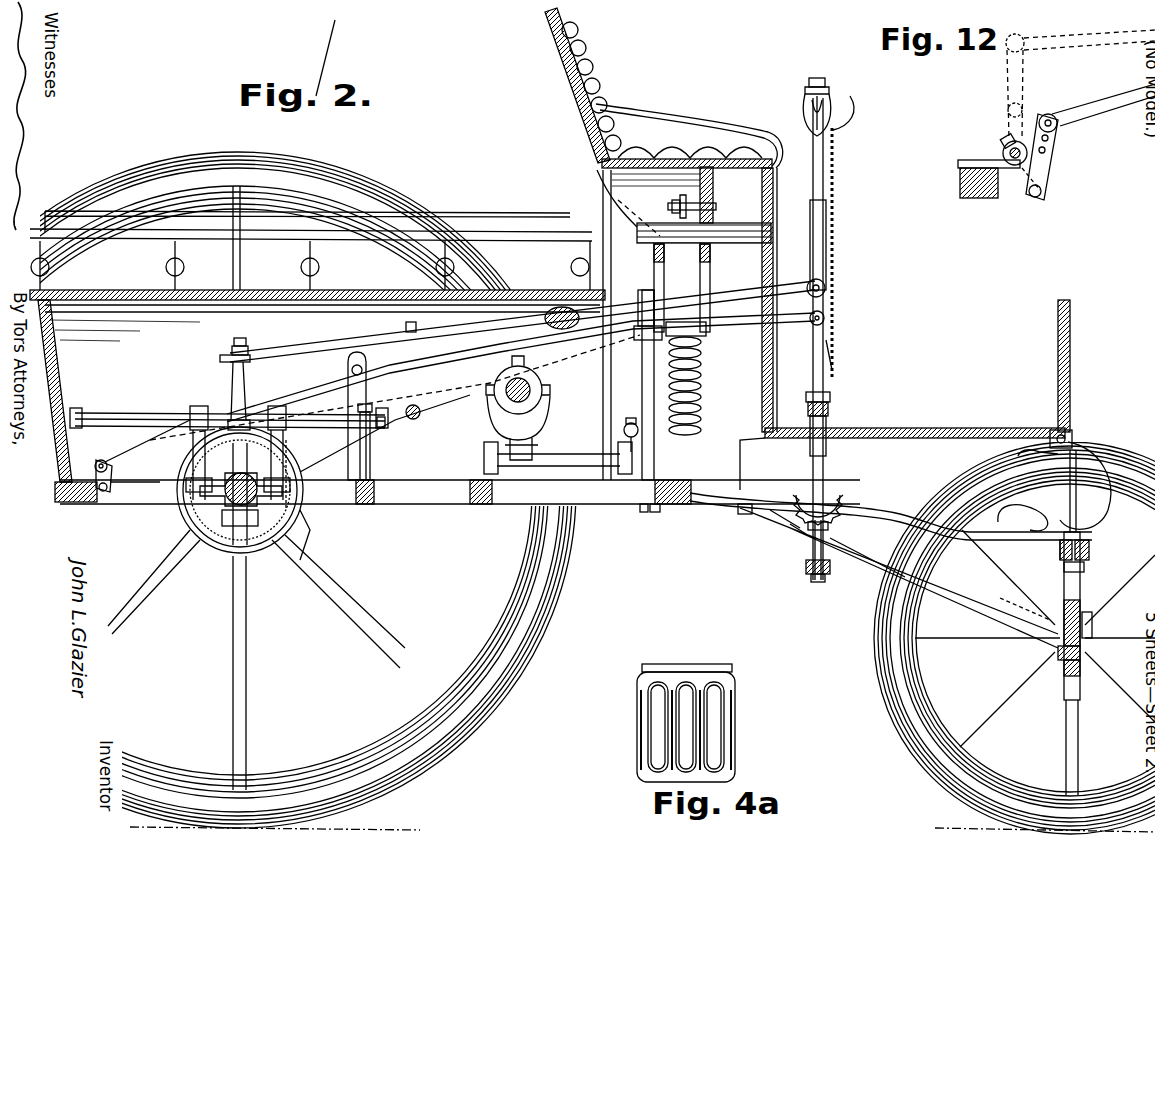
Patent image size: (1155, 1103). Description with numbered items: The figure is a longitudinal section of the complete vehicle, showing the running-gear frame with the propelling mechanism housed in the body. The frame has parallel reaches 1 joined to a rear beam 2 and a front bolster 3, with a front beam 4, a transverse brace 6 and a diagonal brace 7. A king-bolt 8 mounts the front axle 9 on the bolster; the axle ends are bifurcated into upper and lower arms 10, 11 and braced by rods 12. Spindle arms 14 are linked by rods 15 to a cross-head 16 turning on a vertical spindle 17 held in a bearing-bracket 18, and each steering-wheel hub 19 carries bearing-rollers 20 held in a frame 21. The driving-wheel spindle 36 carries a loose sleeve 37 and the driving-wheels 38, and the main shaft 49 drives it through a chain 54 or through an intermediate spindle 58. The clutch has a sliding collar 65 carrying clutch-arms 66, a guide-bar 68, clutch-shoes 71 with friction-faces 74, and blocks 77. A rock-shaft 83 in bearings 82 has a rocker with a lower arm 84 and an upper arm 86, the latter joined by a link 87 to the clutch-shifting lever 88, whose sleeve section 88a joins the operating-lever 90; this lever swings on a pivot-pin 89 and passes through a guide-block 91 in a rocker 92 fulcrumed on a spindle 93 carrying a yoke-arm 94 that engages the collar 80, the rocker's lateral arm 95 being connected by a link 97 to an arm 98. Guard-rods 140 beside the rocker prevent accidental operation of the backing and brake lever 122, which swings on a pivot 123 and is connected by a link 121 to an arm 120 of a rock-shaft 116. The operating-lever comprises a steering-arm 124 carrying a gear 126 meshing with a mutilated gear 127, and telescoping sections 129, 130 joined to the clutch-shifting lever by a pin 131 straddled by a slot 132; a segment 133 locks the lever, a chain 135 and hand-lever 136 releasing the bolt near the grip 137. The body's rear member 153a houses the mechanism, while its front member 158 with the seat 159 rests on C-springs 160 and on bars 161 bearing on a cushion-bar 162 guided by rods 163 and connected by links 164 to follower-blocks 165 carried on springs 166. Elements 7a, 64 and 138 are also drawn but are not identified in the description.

In FIG. 2, the reaches 1 is at (140, 492).
In FIG. 2, the rear beam 2 is at (78, 502).
In FIG. 12, the rear beam 2 is at (966, 200).
In FIG. 2, the bolster 3 is at (1089, 556).
In FIG. 2, the front beam 4 is at (658, 512).
In FIG. 2, the intermediate transverse brace 6 is at (380, 504).
In FIG. 2, the diagonal brace 7 is at (432, 500).
In FIG. 2, the reach rod 7a is at (896, 514).
In FIG. 2, the king-bolt 8 is at (1060, 552).
In FIG. 2, the front axle 9 is at (1082, 580).
In FIG. 2, the upper arm 10 is at (1064, 568).
In FIG. 2, the lower arm 11 is at (1078, 660).
In FIG. 2, the brace rods 12 is at (858, 536).
In FIG. 2, the inwardly-extending arms 14 is at (899, 578).
In FIG. 2, the connecting rods 15 is at (855, 582).
In FIG. 2, the cross-head 16 is at (806, 570).
In FIG. 2, the vertical spindle 17 is at (812, 556).
In FIG. 2, the bearing-bracket 18 is at (806, 545).
In FIG. 2, the hub 19 is at (1094, 628).
In FIG. 4a, the bearing-rollers 20 is at (652, 700).
In FIG. 4a, the roller frame 21 is at (720, 666).
In FIG. 2, the driving-wheel spindle 36 is at (226, 498).
In FIG. 2, the loose sleeve 37 is at (256, 488).
In FIG. 2, the driving-wheels 38 is at (525, 662).
In FIG. 2, the main shaft 49 is at (530, 386).
In FIG. 2, the chain 54 is at (340, 495).
In FIG. 2, the intermediate spindle 58 is at (421, 414).
In FIG. 2, the rod 64 is at (292, 450).
In FIG. 2, the sliding collar 65 is at (236, 512).
In FIG. 2, the clutch-arms 66 is at (290, 530).
In FIG. 2, the guide-bar 68 is at (250, 528).
In FIG. 2, the clutch-shoes 71 is at (195, 505).
In FIG. 2, the friction-faces 74 is at (300, 560).
In FIG. 2, the blocks 77 is at (230, 422).
In FIG. 2, the collar 80 is at (540, 414).
In FIG. 2, the bearings 82 is at (371, 445).
In FIG. 2, the rock-shaft 83 is at (153, 414).
In FIG. 2, the downwardly-extending arm 84 is at (196, 432).
In FIG. 2, the upper arm 86 is at (234, 386).
In FIG. 2, the link 87 is at (230, 350).
In FIG. 2, the clutch-shifting lever 88 is at (328, 348).
In FIG. 2, the sleeve section 88a is at (562, 306).
In FIG. 2, the pivot-pin 89 is at (405, 326).
In FIG. 2, the operating-lever 90 is at (847, 254).
In FIG. 2, the guide-block 91 is at (640, 300).
In FIG. 2, the rocker 92 is at (641, 374).
In FIG. 2, the spindle 93 is at (582, 456).
In FIG. 2, the yoke-arm 94 is at (533, 443).
In FIG. 2, the lateral arm 95 is at (642, 512).
In FIG. 2, the link 97 is at (624, 432).
In FIG. 2, the arm 98 is at (626, 424).
In FIG. 2, the rock-shaft 116 is at (102, 460).
In FIG. 12, the rock-shaft 116 is at (1004, 148).
In FIG. 2, the arm 120 is at (100, 494).
In FIG. 12, the arm 120 is at (1022, 176).
In FIG. 2, the link 121 is at (112, 470).
In FIG. 12, the link 121 is at (1046, 164).
In FIG. 2, the backing and brake lever 122 is at (446, 360).
In FIG. 12, the backing and brake lever 122 is at (1112, 108).
In FIG. 2, the intermediate pivot 123 is at (350, 370).
In FIG. 2, the steering-arm 124 is at (852, 432).
In FIG. 2, the toothed segment 126 is at (756, 516).
In FIG. 2, the mutilated gear 127 is at (842, 518).
In FIG. 2, the upper section 129 is at (825, 170).
In FIG. 2, the lower section 130 is at (836, 364).
In FIG. 2, the transverse pin 131 is at (826, 290).
In FIG. 2, the slot 132 is at (825, 255).
In FIG. 2, the segment 133 is at (830, 414).
In FIG. 2, the chain 135 is at (826, 322).
In FIG. 2, the hand-lever 136 is at (850, 112).
In FIG. 2, the grip 137 is at (806, 92).
In FIG. 2, the handle 138 is at (808, 112).
In FIG. 2, the guard-rods 140 is at (656, 344).
In FIG. 2, the rear member of vehicle-body 153a is at (478, 213).
In FIG. 2, the front member of vehicle-body 158 is at (902, 443).
In FIG. 2, the driver's seat 159 is at (664, 97).
In FIG. 2, the C-springs 160 is at (1068, 442).
In FIG. 2, the rearwardly-extending bars 161 is at (740, 220).
In FIG. 2, the cushion-bar 162 is at (620, 203).
In FIG. 2, the vertical guide-rods 163 is at (676, 200).
In FIG. 2, the pivotal links 164 is at (654, 266).
In FIG. 2, the follower-blocks 165 is at (700, 332).
In FIG. 2, the springs 166 is at (704, 392).